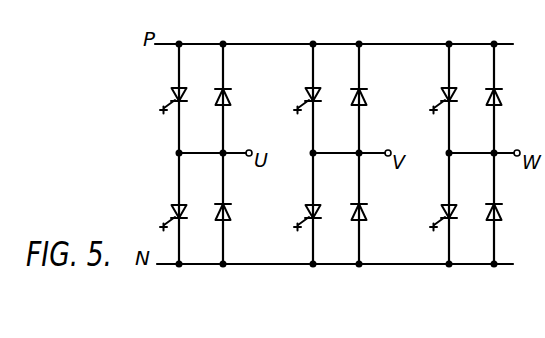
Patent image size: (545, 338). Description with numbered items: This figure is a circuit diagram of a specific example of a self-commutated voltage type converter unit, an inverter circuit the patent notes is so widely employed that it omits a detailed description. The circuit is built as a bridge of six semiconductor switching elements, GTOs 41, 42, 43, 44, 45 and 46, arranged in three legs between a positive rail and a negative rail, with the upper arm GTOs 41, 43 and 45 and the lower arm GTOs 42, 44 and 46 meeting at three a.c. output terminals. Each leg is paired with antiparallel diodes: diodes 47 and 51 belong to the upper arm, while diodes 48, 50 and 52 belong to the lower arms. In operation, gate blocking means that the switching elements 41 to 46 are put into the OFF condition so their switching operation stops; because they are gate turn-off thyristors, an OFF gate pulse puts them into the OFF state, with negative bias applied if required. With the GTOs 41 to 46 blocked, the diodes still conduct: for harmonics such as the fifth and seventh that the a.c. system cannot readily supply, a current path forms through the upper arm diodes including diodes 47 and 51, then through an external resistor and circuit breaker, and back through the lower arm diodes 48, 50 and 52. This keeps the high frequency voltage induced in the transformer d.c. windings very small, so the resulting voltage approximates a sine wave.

The GTO 41 is at (166, 100).
The GTO 42 is at (168, 206).
The GTO 43 is at (300, 102).
The GTO 44 is at (300, 207).
The GTO 45 is at (437, 101).
The GTO 46 is at (437, 208).
The diode 47 is at (229, 106).
The diode 48 is at (229, 221).
The diode 50 is at (365, 221).
The diode 51 is at (500, 106).
The diode 52 is at (500, 221).